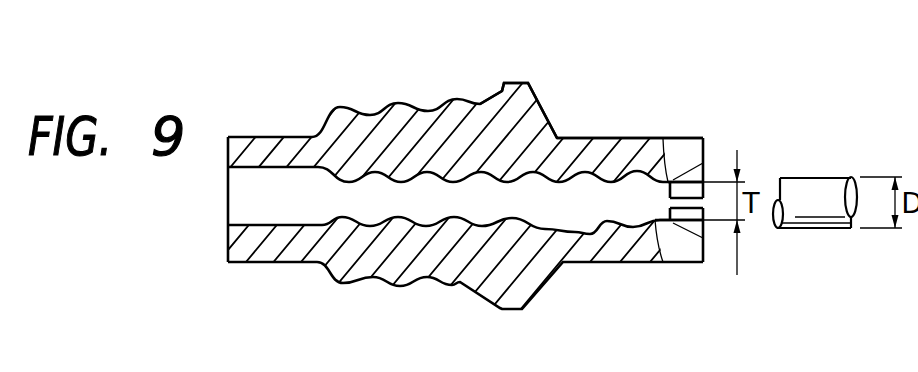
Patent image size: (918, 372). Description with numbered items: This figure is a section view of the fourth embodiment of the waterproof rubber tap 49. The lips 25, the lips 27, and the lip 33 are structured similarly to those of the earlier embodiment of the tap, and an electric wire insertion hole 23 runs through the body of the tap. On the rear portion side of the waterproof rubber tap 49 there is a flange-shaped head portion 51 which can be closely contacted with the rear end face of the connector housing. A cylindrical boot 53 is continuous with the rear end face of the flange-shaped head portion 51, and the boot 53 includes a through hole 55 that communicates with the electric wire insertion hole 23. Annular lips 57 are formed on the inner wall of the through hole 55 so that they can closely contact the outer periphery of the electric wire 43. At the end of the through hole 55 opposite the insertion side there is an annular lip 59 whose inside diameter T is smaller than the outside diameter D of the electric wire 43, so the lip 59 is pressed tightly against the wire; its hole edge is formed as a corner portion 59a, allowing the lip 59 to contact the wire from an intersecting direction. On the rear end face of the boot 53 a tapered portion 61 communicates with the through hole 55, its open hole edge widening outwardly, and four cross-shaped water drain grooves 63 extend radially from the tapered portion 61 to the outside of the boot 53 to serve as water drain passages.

The electric wire insertion hole 23 is at (270, 213).
The lips 25 is at (450, 176).
The lips 27 is at (437, 103).
The lip 33 is at (490, 97).
The electric wire 43 is at (812, 180).
The waterproof rubber tap 49 is at (294, 123).
The flange-shaped head portion 51 is at (518, 83).
The cylindrical boot 53 is at (622, 138).
The through hole 55 is at (604, 224).
The annular lips 57 is at (567, 178).
The annular lip 59 is at (668, 212).
The corner portion 59a is at (687, 222).
The tapered portion 61 is at (706, 170).
The water drain grooves 63 is at (697, 203).